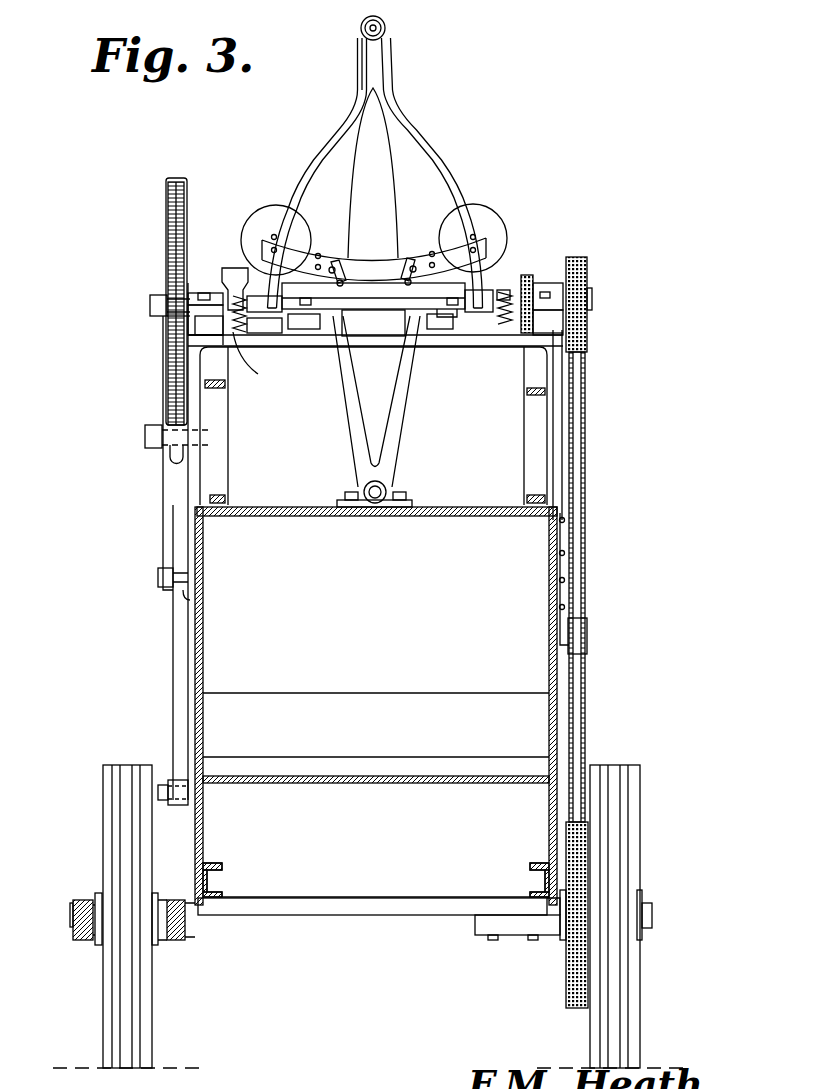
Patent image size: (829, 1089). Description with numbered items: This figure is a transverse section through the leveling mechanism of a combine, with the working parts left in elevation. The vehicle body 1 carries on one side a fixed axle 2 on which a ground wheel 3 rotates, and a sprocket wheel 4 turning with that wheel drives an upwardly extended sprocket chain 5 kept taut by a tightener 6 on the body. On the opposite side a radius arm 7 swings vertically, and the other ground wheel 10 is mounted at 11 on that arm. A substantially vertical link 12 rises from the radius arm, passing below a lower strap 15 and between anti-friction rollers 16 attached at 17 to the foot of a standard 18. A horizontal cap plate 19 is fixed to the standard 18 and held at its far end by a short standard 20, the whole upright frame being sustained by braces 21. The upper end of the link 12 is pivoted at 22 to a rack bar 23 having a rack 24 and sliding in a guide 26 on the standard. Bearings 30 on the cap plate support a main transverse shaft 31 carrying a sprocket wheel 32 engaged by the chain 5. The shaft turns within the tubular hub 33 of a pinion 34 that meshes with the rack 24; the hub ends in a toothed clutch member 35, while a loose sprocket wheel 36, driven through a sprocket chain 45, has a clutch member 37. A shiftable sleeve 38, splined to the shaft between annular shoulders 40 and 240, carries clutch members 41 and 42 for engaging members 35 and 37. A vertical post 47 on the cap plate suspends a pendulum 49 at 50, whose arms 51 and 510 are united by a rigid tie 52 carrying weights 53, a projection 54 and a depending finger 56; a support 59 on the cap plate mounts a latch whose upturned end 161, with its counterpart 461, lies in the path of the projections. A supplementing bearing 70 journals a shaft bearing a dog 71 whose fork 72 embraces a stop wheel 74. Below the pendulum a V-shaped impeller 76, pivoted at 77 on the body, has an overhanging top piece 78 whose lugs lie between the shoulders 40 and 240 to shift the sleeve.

The body 1 is at (432, 520).
The fixed axle 2 is at (473, 920).
The ground wheel 3 is at (640, 827).
The sprocket wheel 4 is at (566, 982).
The sprocket chain 5 is at (583, 717).
The tightener 6 is at (578, 637).
The radius arm 7 is at (177, 941).
The ground wheel 10 is at (105, 1022).
The wheel mounting 11 is at (72, 920).
The link 12 is at (178, 652).
The lower strap 15 is at (167, 778).
The anti-friction rollers 16 is at (185, 790).
The attachment 17 is at (162, 792).
The standard 18 is at (197, 503).
The cap plate 19 is at (383, 350).
The short standard 20 is at (555, 433).
The braces 21 is at (217, 433).
The pivot 22 is at (158, 580).
The rack bar 23 is at (166, 210).
The rack 24 is at (177, 178).
The guide 26 is at (153, 442).
The bearings 30 is at (547, 283).
The main transverse shaft 31 is at (150, 302).
The sprocket wheel 32 is at (587, 279).
The tubular hub 33 is at (227, 310).
The pinion 34 is at (165, 317).
The toothed clutch member 35 is at (223, 332).
The sprocket wheel 36 is at (537, 270).
The toothed clutch member 37 is at (512, 312).
The shiftable sleeve 38 is at (480, 316).
The annular shoulder 40 is at (442, 329).
The toothed clutch member 41 is at (247, 303).
The toothed clutch member 42 is at (497, 293).
The sprocket chain 45 is at (538, 333).
The vertical post 47 is at (390, 180).
The pendulum 49 is at (385, 79).
The pendulum suspension 50 is at (386, 26).
The pendulum arm 51 is at (432, 158).
The pendulum arm 510 is at (342, 133).
The rigid tie 52 is at (375, 263).
The weights 53 is at (274, 206).
The projection 54 is at (343, 262).
The depending finger 56 is at (438, 285).
The support 59 is at (350, 277).
The supplementing bearing 70 is at (252, 328).
The dog 71 is at (239, 293).
The fork 72 is at (223, 267).
The stop wheel 74 is at (258, 374).
The V-shaped impeller 76 is at (348, 428).
The impeller pivot 77 is at (375, 505).
The top piece 78 is at (373, 323).
The upturned latch end 161 is at (412, 260).
The annular shoulder 240 is at (312, 330).
The upturned latch end 461 is at (332, 257).